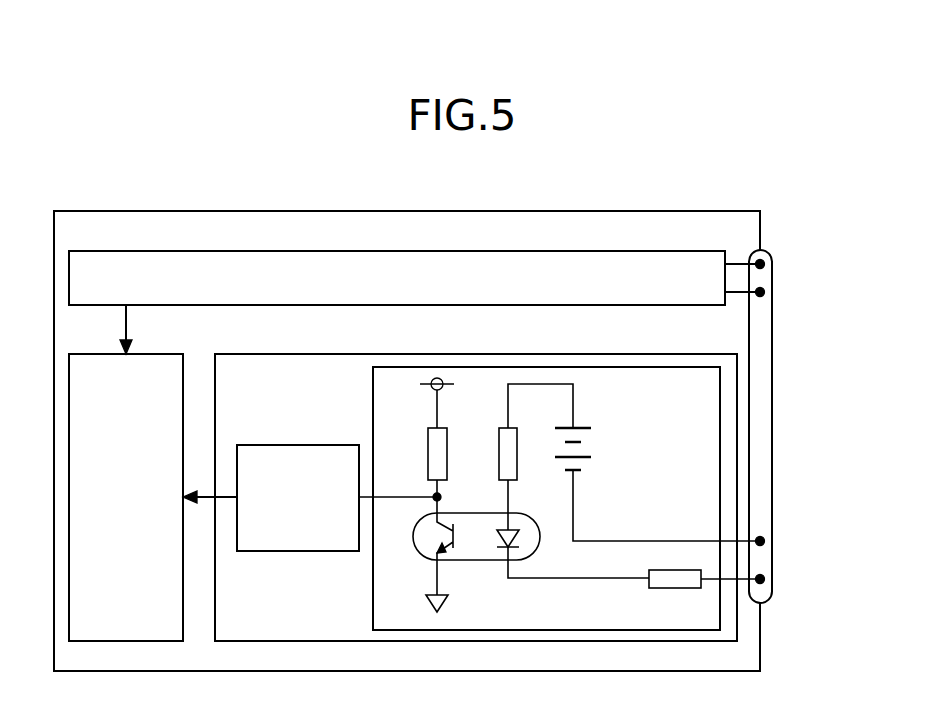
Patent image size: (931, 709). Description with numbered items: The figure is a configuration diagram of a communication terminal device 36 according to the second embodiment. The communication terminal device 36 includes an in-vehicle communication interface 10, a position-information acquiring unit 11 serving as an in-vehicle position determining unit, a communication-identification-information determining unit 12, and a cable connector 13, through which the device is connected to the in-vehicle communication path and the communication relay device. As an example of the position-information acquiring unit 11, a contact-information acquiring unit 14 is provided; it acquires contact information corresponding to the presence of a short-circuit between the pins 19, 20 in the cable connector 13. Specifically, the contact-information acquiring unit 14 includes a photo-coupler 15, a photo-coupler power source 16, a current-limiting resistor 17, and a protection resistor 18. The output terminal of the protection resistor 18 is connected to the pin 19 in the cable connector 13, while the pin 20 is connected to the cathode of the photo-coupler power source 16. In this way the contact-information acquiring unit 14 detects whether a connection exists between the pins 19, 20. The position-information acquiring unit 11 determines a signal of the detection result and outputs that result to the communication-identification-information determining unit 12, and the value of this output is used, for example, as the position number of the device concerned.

The communication terminal device 36 is at (632, 209).
The in-vehicle communication interface 10 is at (634, 251).
The position-information acquiring unit 11 is at (634, 352).
The communication-identification-information determining unit 12 is at (150, 351).
The cable connector 13 is at (772, 341).
The contact-information acquiring unit 14 is at (373, 392).
The photo-coupler 15 is at (525, 513).
The photo-coupler power source 16 is at (596, 408).
The current-limiting resistor 17 is at (510, 428).
The protection resistor 18 is at (655, 590).
The pin 19 is at (769, 579).
The pin 20 is at (769, 541).